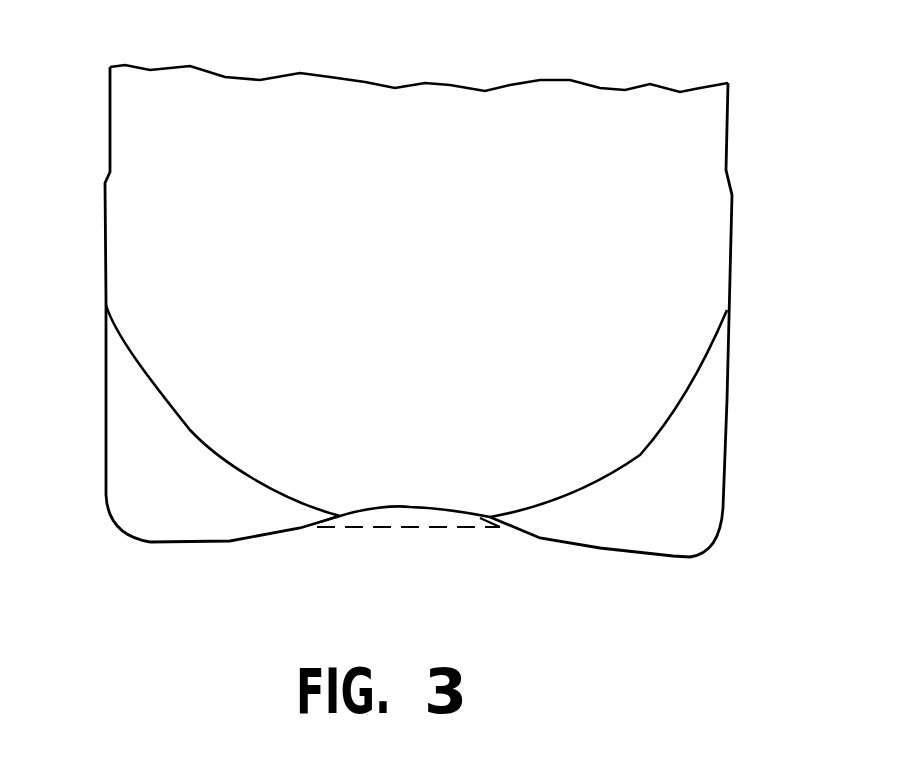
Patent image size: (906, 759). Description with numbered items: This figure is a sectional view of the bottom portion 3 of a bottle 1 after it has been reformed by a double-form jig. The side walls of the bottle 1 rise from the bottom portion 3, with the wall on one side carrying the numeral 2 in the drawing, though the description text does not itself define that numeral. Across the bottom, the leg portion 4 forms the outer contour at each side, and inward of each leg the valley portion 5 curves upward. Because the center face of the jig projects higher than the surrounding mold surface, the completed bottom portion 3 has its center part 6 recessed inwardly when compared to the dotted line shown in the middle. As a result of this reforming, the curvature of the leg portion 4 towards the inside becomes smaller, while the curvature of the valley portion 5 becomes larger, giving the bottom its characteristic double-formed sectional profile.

The bottle 1 is at (426, 356).
The side wall 2 is at (110, 93).
The bottom portion 3 is at (740, 453).
The leg portion 4 is at (152, 544).
The valley portion 5 is at (250, 480).
The center part 6 is at (402, 510).